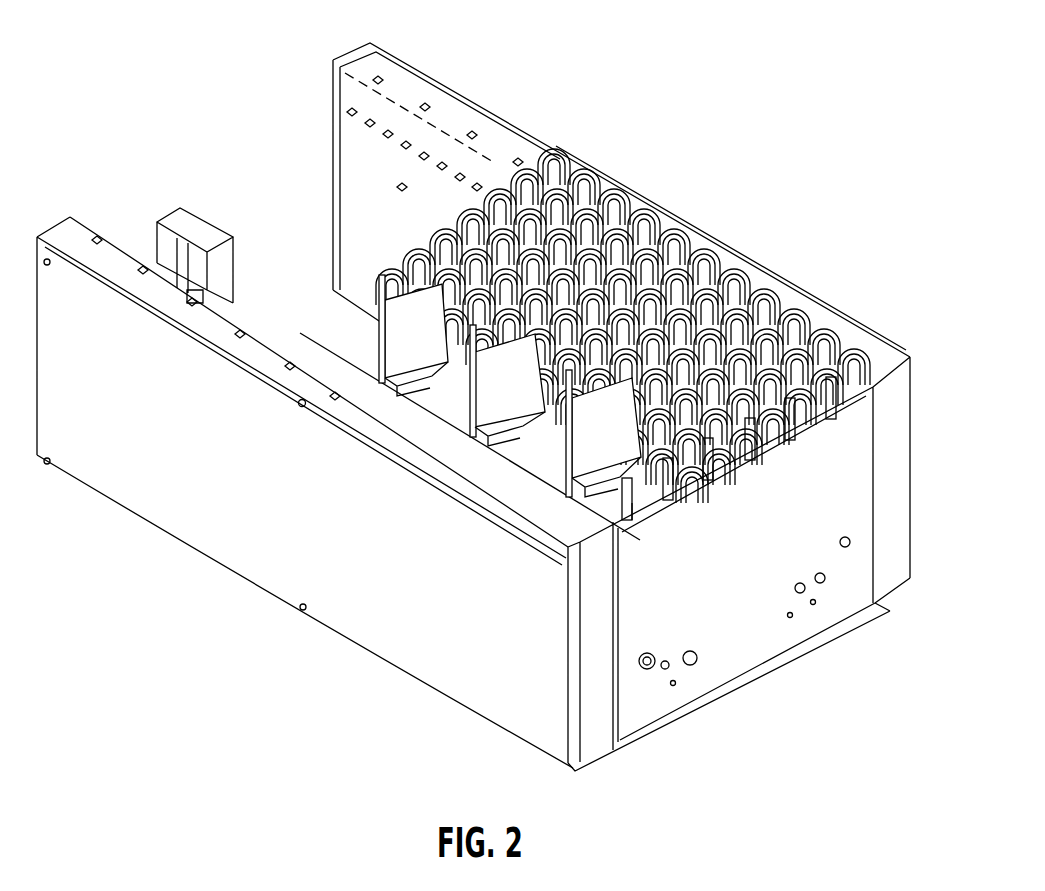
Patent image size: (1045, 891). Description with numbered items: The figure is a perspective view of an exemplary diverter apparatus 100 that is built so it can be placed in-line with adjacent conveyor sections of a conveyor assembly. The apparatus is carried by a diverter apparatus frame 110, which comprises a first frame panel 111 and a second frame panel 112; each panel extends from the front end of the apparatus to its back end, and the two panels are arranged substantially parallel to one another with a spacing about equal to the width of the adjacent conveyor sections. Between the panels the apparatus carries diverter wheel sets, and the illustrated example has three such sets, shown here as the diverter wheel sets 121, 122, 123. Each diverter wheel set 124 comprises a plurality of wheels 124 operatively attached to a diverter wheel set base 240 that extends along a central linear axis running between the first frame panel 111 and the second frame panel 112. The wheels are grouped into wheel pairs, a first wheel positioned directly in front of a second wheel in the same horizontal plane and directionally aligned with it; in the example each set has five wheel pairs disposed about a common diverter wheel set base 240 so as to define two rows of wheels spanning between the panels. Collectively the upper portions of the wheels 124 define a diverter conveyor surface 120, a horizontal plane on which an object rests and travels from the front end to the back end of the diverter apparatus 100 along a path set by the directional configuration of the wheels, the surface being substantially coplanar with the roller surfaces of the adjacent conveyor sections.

The diverter apparatus 100 is at (496, 407).
The diverter apparatus frame 110 is at (496, 388).
The first frame panel 111 is at (167, 503).
The second frame panel 112 is at (500, 140).
The diverter conveyor surface 120 is at (572, 374).
The first coil module 121 is at (577, 475).
The second coil module 122 is at (489, 432).
The third coil module 123 is at (392, 383).
The diverter wheel set 124 is at (850, 330).
The diverter wheel set base 240 is at (632, 503).